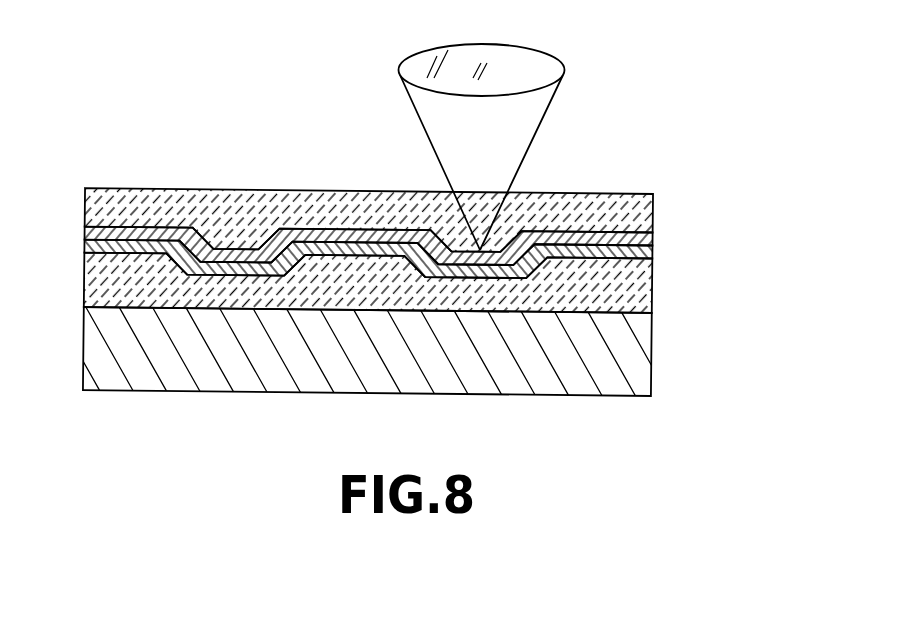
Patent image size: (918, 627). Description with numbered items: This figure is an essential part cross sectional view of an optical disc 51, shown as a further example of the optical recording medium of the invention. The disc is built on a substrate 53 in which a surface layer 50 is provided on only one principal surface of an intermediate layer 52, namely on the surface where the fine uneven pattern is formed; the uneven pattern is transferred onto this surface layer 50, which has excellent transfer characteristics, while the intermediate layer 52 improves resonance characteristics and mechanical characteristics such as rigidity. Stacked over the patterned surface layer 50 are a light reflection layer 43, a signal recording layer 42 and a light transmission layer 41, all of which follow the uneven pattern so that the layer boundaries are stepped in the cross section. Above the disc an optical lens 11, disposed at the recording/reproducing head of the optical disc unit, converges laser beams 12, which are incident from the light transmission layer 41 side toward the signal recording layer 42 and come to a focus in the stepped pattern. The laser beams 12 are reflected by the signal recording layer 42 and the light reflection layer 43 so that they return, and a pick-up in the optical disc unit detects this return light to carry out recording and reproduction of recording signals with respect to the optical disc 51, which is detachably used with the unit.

The optical lens 11 is at (505, 63).
The laser beams 12 is at (500, 130).
The light transmission layer 41 is at (652, 195).
The signal recording layer 42 is at (652, 233).
The light reflection layer 43 is at (652, 254).
The surface layer 50 is at (652, 291).
The optical disc 51 is at (412, 231).
The intermediate layer 52 is at (373, 351).
The substrate 53 is at (412, 325).